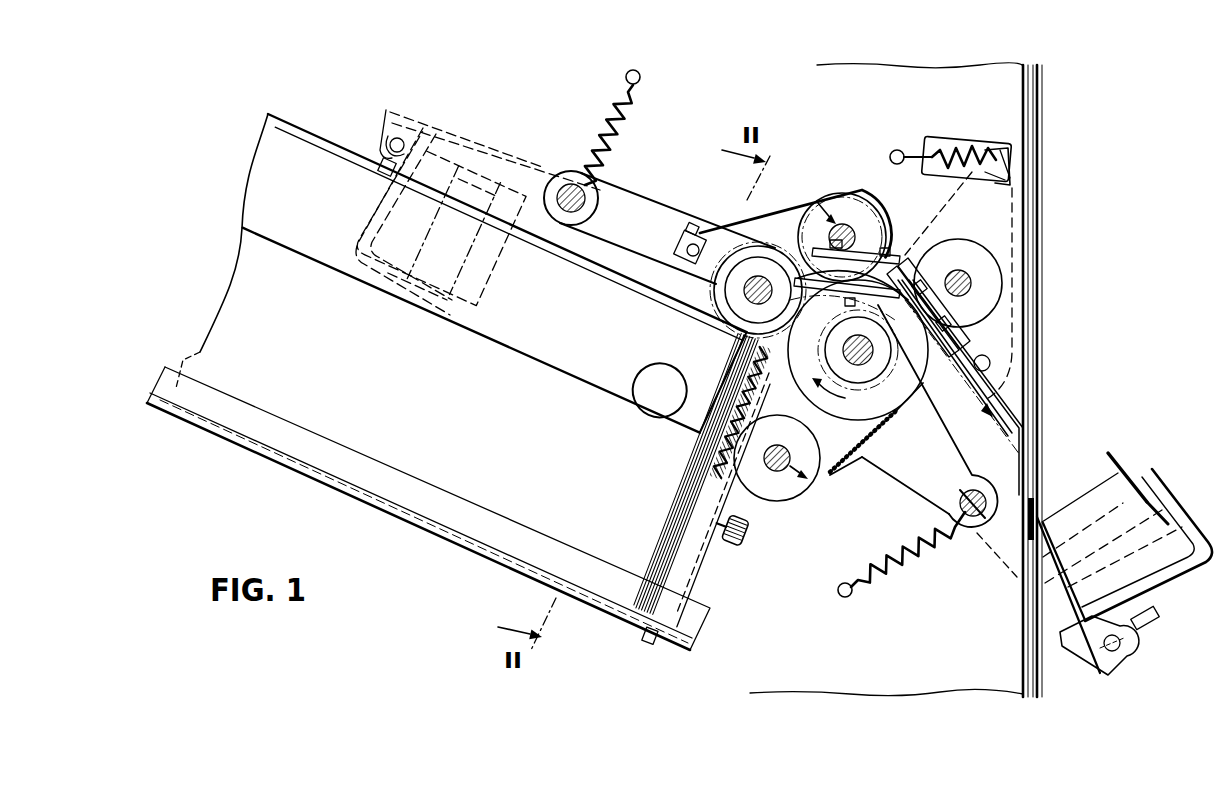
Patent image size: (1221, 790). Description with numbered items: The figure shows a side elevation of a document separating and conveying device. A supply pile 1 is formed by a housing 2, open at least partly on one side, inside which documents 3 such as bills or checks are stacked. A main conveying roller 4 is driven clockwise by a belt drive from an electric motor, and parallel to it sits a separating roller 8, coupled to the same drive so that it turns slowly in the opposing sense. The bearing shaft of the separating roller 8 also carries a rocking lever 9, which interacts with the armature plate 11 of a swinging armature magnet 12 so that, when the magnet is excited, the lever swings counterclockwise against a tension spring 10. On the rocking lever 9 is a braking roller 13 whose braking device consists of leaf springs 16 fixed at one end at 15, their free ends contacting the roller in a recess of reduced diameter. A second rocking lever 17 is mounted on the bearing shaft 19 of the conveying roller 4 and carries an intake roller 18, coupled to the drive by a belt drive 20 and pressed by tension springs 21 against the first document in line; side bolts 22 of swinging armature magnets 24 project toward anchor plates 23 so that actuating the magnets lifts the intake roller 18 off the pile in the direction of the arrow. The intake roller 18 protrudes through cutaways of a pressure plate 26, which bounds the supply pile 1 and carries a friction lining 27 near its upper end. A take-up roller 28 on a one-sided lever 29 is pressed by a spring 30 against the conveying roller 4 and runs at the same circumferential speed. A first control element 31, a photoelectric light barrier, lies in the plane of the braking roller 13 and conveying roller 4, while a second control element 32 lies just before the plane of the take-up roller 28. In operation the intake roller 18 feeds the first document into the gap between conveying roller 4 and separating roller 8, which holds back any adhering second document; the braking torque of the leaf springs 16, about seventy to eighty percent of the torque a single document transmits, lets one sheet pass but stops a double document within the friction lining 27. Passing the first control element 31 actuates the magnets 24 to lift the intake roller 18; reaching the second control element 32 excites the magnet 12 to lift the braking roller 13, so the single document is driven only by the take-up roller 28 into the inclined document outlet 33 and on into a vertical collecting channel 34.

The supply pile 1 is at (492, 568).
The housing 2 is at (620, 562).
The documents 3 is at (667, 543).
The main conveying roller 4 is at (900, 413).
The separating roller 8 is at (723, 298).
The rocking lever 9 is at (641, 202).
The tension spring 10 is at (636, 102).
The armature plate 11 is at (497, 148).
The swinging armature magnet 12 is at (482, 263).
The braking roller 13 is at (840, 208).
The fixing point of the leaf springs 15 is at (680, 252).
The leaf springs 16 is at (785, 207).
The rocking lever 17 is at (922, 488).
The intake roller 18 is at (788, 497).
The bearing shaft 19 is at (877, 360).
The belt drive 20 is at (853, 462).
The tension springs 21 is at (902, 562).
The side bolts 22 is at (987, 538).
The anchor plates 23 is at (1060, 645).
The swinging armature magnets 24 is at (1117, 487).
The pressure plate 26 is at (700, 570).
The friction lining 27 is at (733, 440).
The take-up roller 28 is at (998, 267).
The lever 29 is at (1003, 185).
The spring 30 is at (938, 148).
The first control element 31 is at (880, 257).
The second control element 32 is at (940, 247).
The document outlet 33 is at (1017, 453).
The collecting channel 34 is at (1027, 353).